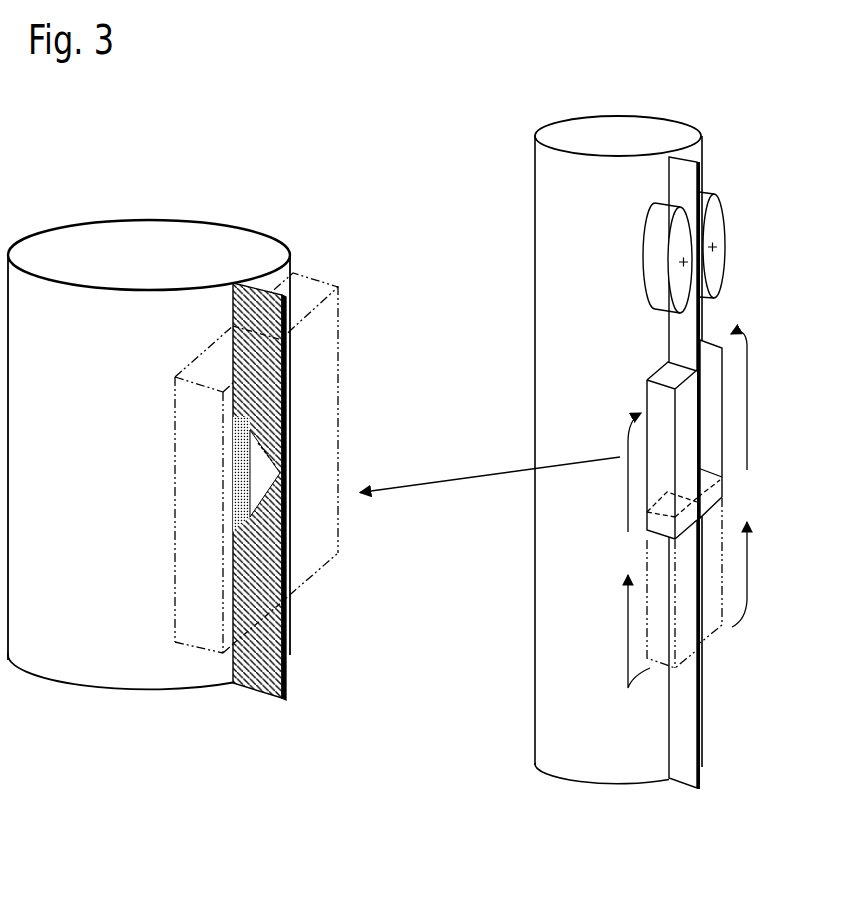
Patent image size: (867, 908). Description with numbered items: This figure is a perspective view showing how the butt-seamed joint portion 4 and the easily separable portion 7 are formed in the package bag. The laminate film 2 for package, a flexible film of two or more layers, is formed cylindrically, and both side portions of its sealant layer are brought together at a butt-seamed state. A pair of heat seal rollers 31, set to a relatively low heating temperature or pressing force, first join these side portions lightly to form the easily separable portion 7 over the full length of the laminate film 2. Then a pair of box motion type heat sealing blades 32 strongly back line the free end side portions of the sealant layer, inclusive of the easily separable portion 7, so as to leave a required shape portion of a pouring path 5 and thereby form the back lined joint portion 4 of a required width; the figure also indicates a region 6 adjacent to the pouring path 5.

The laminate film for package 2 is at (100, 615).
The butt-seamed joint portion 4 is at (258, 672).
The pouring path 5 is at (283, 430).
The opening 6 is at (283, 474).
The easily separable portion 7 is at (233, 472).
The roller 31 is at (723, 226).
The holding block 32 is at (670, 390).